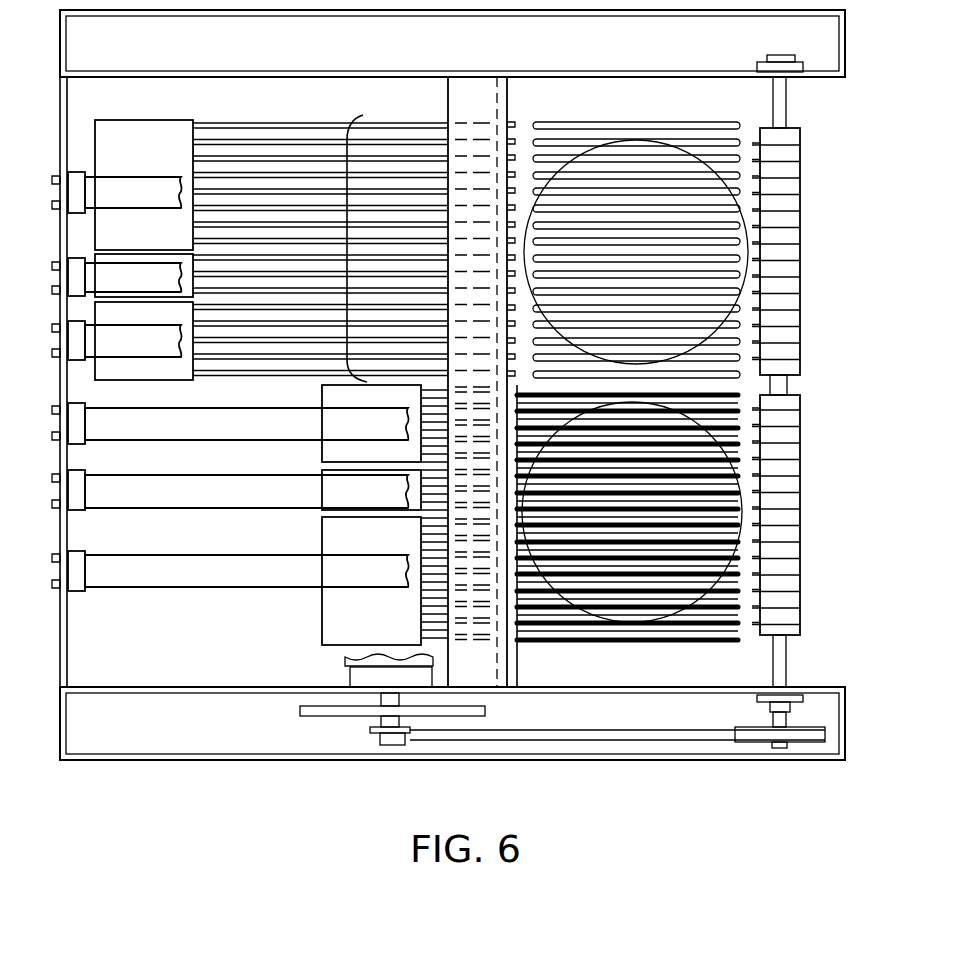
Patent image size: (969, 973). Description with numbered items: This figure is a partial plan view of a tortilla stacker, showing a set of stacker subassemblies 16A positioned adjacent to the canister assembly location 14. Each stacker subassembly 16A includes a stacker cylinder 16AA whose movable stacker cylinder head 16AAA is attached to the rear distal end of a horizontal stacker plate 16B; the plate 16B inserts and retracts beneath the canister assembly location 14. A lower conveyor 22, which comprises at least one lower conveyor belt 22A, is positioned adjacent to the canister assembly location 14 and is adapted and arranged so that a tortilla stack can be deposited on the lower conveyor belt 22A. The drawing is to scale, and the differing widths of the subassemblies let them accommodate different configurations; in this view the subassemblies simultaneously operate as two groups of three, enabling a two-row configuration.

The canister assembly location 14 is at (618, 665).
The stacker subassembly 16A is at (107, 135).
The stacker cylinder 16AA is at (117, 187).
The stacker cylinder head 16AAA is at (162, 133).
The horizontal stacker plate 16B is at (343, 203).
The lower conveyor 22 is at (792, 196).
The lower conveyor belt 22A is at (788, 314).